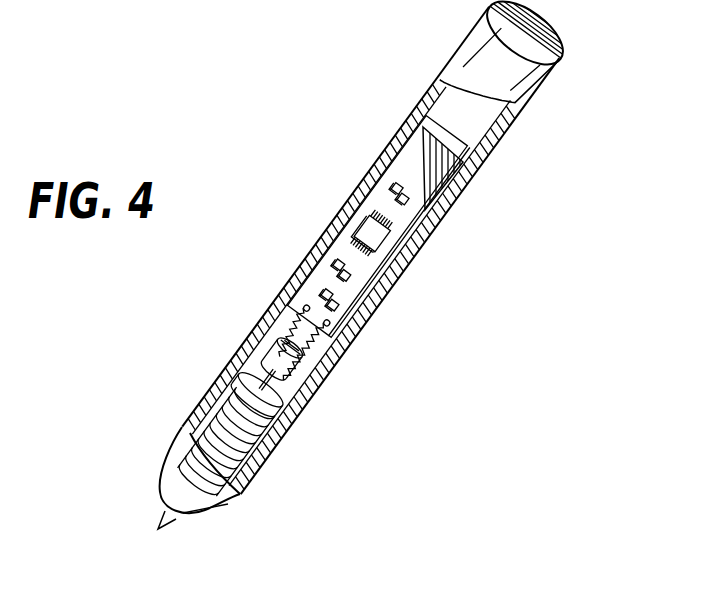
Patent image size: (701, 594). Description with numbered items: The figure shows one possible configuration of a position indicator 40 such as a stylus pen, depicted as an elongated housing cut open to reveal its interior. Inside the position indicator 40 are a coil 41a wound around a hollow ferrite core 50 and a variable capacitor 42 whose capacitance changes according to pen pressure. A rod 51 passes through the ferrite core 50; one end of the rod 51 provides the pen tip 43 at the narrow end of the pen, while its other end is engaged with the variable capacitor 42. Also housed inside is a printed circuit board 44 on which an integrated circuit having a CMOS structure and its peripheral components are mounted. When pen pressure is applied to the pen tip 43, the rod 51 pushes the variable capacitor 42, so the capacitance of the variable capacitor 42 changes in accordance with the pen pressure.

The position indicator 40 is at (549, 82).
The coil 41a is at (253, 450).
The variable capacitor 42 is at (320, 390).
The pen tip 43 is at (157, 516).
The printed circuit board 44 is at (397, 208).
The ferrite core 50 is at (242, 378).
The rod 51 is at (266, 358).